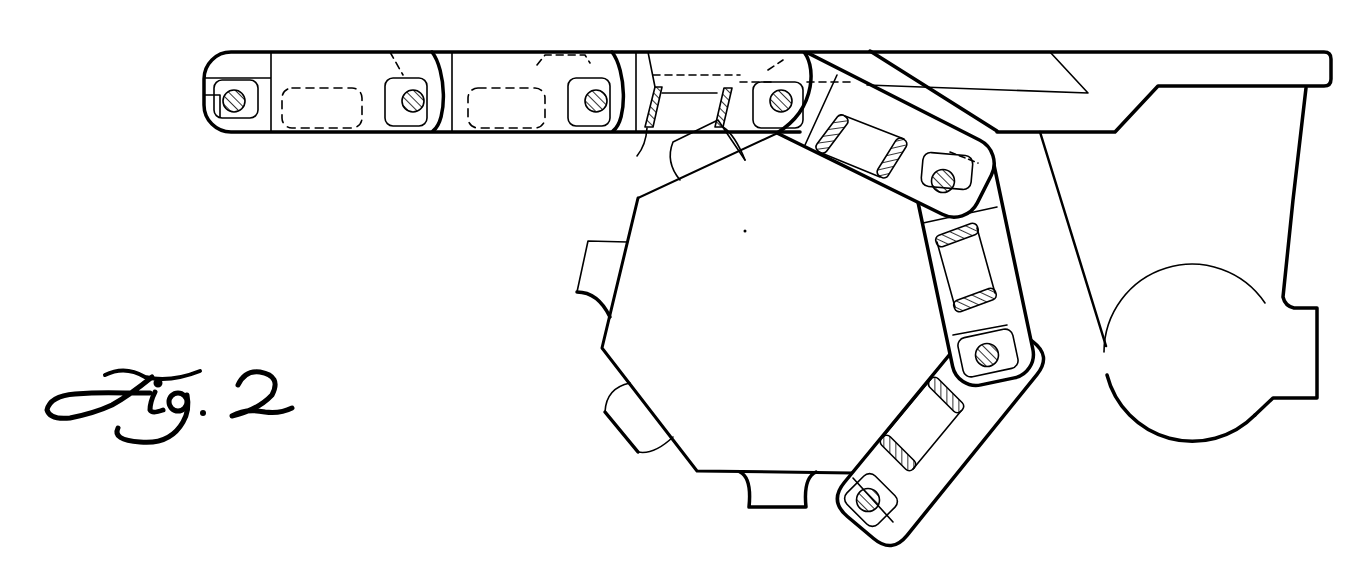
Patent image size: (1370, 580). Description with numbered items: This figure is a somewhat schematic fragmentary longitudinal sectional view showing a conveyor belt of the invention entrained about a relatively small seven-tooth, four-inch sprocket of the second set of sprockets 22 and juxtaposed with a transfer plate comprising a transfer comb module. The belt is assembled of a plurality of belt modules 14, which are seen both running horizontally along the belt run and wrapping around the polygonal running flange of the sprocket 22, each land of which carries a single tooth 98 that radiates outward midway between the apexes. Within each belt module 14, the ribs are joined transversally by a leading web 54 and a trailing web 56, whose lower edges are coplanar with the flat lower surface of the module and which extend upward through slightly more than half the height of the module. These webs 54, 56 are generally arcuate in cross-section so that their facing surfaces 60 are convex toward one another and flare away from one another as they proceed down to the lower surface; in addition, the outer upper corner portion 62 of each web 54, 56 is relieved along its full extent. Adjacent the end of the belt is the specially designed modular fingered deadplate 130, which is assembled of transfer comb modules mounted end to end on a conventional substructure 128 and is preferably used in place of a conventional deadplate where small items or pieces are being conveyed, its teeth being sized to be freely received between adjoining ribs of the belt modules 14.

The belt modules 14 is at (378, 36).
The second set of sprockets 22 is at (722, 480).
The leading web 54 is at (636, 156).
The trailing web 56 is at (742, 162).
The facing surfaces 60 is at (836, 152).
The outer upper corner portion 62 is at (651, 88).
The tooth 98 is at (630, 432).
The substructure 128 is at (1273, 266).
The modular fingered deadplate 130 is at (845, 49).